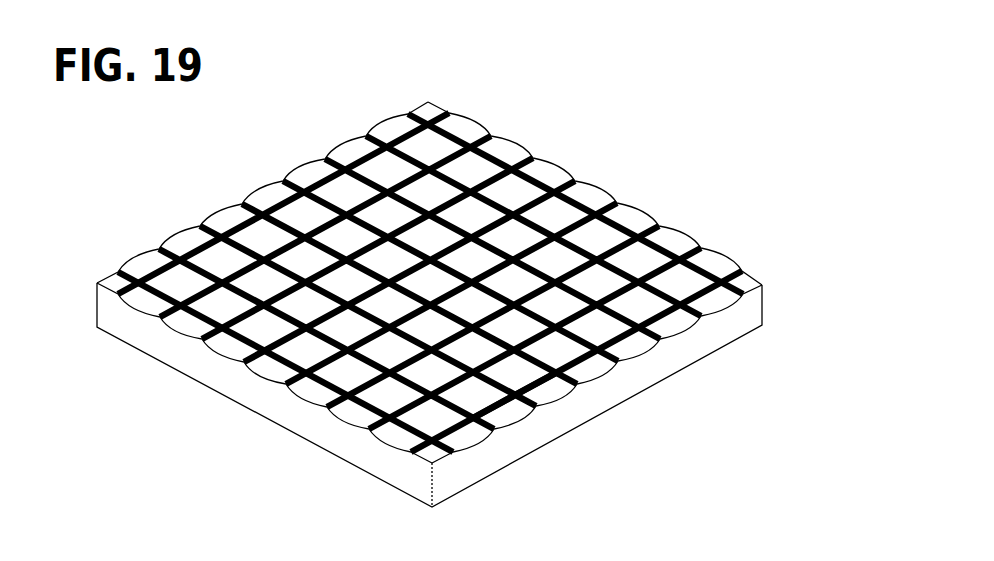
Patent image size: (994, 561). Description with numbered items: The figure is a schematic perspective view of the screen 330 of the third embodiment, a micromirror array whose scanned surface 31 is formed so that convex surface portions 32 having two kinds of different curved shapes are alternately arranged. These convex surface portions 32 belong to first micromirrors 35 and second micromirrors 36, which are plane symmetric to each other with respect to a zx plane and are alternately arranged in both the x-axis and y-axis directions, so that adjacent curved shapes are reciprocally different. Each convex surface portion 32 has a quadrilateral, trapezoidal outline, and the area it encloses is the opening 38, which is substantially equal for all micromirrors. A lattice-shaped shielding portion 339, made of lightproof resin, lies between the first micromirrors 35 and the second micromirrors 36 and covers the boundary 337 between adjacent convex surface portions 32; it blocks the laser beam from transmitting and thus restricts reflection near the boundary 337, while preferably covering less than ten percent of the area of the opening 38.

The screen 330 is at (464, 304).
The scanned surface 31 is at (407, 254).
The convex surface portions 32 is at (262, 362).
The opening 38 is at (250, 332).
The boundary 337 is at (272, 388).
The shielding portion 339 is at (455, 138).
The first micromirrors 35 is at (530, 383).
The second micromirrors 36 is at (490, 406).